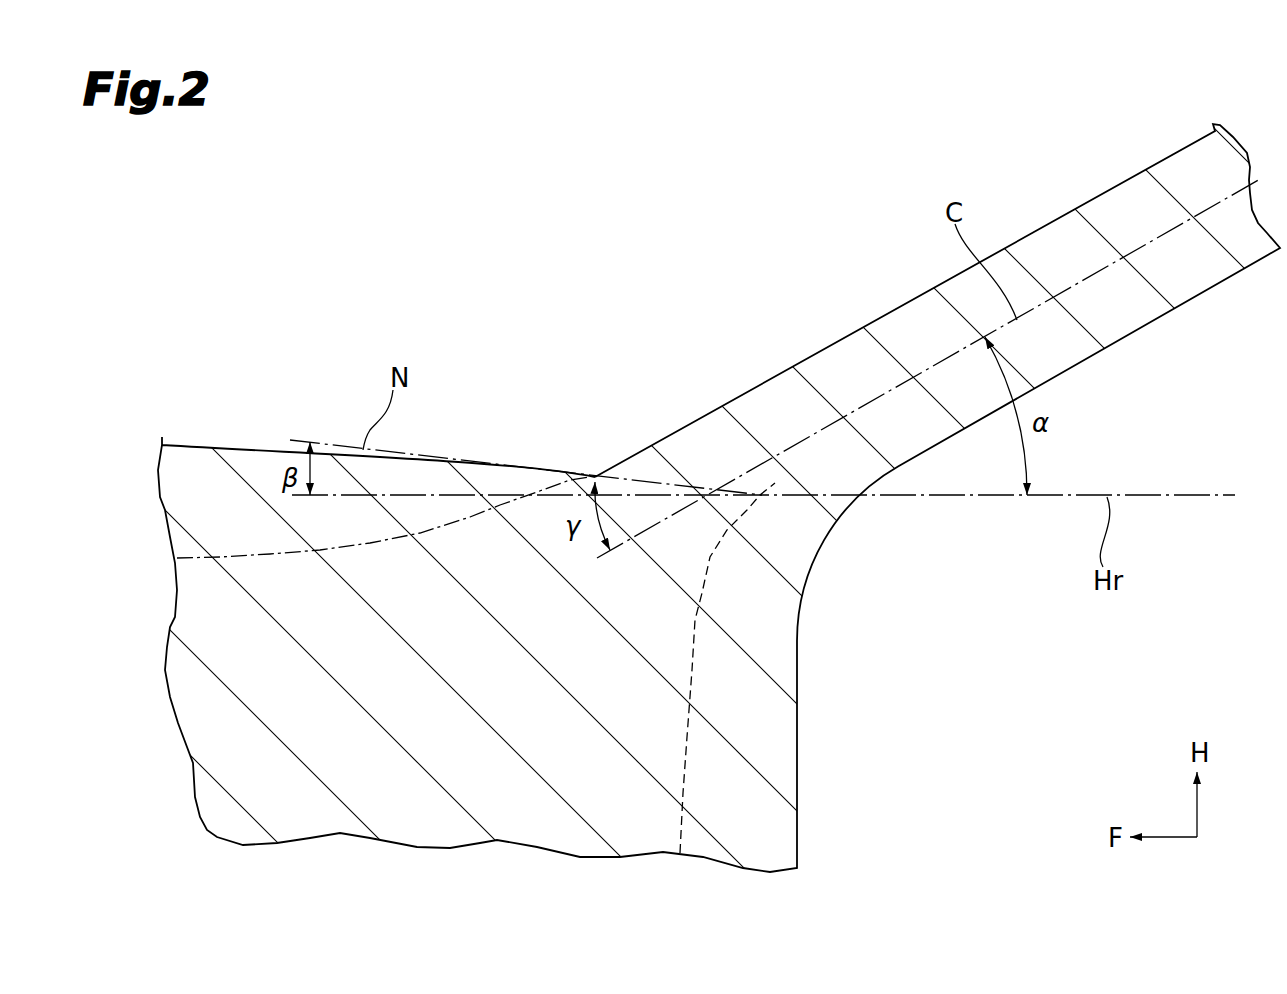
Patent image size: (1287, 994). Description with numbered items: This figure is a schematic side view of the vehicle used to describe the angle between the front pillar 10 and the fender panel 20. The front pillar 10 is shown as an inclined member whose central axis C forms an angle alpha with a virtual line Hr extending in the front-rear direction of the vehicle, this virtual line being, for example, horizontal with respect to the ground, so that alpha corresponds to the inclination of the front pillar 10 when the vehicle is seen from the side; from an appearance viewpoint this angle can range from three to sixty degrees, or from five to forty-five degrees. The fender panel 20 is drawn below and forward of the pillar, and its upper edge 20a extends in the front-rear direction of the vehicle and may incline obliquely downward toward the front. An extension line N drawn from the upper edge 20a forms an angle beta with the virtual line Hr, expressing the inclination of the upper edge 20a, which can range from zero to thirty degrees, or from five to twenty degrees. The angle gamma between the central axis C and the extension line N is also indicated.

The front pillar 10 is at (820, 243).
The fender panel 20 is at (697, 665).
The upper edge of the fender panel 20a is at (633, 478).